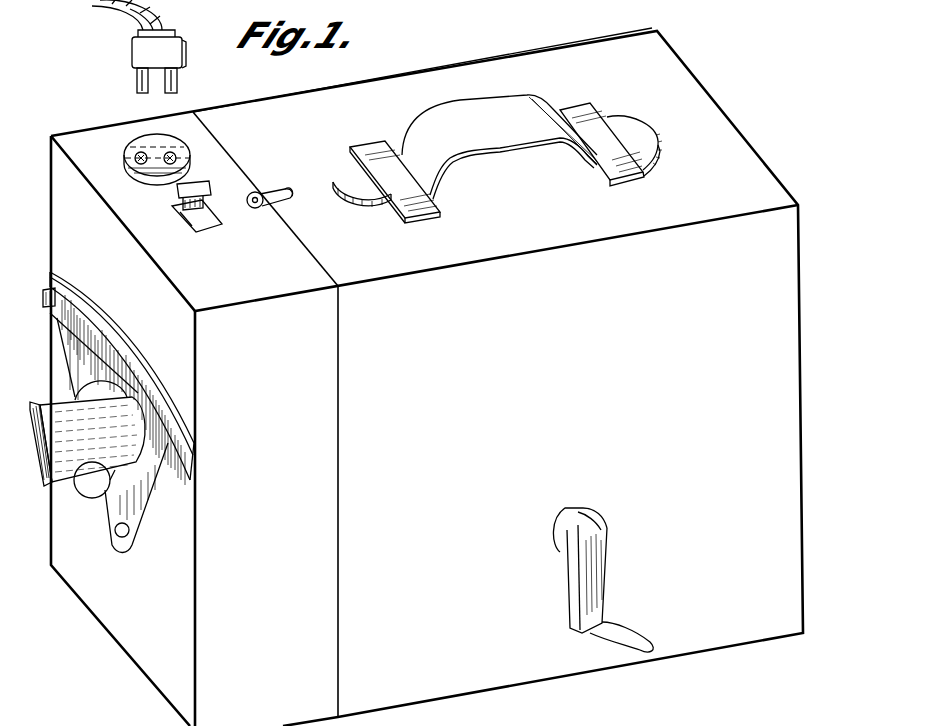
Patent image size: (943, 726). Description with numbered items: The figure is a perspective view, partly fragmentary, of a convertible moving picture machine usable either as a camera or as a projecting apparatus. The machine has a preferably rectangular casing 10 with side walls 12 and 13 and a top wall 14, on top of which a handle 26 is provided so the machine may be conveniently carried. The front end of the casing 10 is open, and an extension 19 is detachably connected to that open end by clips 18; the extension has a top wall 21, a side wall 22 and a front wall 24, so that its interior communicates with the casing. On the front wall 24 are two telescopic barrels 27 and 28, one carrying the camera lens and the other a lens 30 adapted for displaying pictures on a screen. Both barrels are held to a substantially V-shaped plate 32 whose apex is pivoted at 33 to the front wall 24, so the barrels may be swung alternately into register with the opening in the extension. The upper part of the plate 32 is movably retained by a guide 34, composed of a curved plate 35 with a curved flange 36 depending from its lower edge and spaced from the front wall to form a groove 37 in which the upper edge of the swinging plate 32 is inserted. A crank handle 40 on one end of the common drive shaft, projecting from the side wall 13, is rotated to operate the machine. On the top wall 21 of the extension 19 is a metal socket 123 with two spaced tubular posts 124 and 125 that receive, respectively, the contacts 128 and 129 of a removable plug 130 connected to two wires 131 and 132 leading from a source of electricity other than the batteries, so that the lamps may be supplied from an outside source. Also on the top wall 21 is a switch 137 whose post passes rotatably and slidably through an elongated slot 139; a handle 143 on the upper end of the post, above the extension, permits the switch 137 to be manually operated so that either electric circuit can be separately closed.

The casing 10 is at (800, 292).
The side wall 12 is at (740, 636).
The side wall 13 is at (372, 84).
The top wall 14 is at (718, 120).
The clips 18 is at (263, 192).
The extension 19 is at (148, 678).
The top wall 21 is at (322, 262).
The side wall 22 is at (338, 658).
The front wall 24 is at (127, 637).
The handle 26 is at (503, 140).
The telescopic barrel 27 is at (52, 484).
The telescopic barrel 28 is at (55, 398).
The lens 30 is at (41, 718).
The V-shaped plate 32 is at (142, 520).
The pivot 33 is at (118, 538).
The guide 34 is at (196, 455).
The curved plate 35 is at (158, 389).
The curved flange 36 is at (175, 438).
The groove 37 is at (200, 478).
The crank handle 40 is at (597, 566).
The metal socket 123 is at (192, 157).
The tubular post 124 is at (135, 157).
The tubular post 125 is at (177, 157).
The contact 128 is at (137, 78).
The contact 129 is at (177, 80).
The removable plug 130 is at (182, 56).
The wire 131 is at (130, 18).
The wire 132 is at (162, 22).
The switch 137 is at (212, 215).
The elongated slot 139 is at (186, 236).
The handle 143 is at (208, 185).